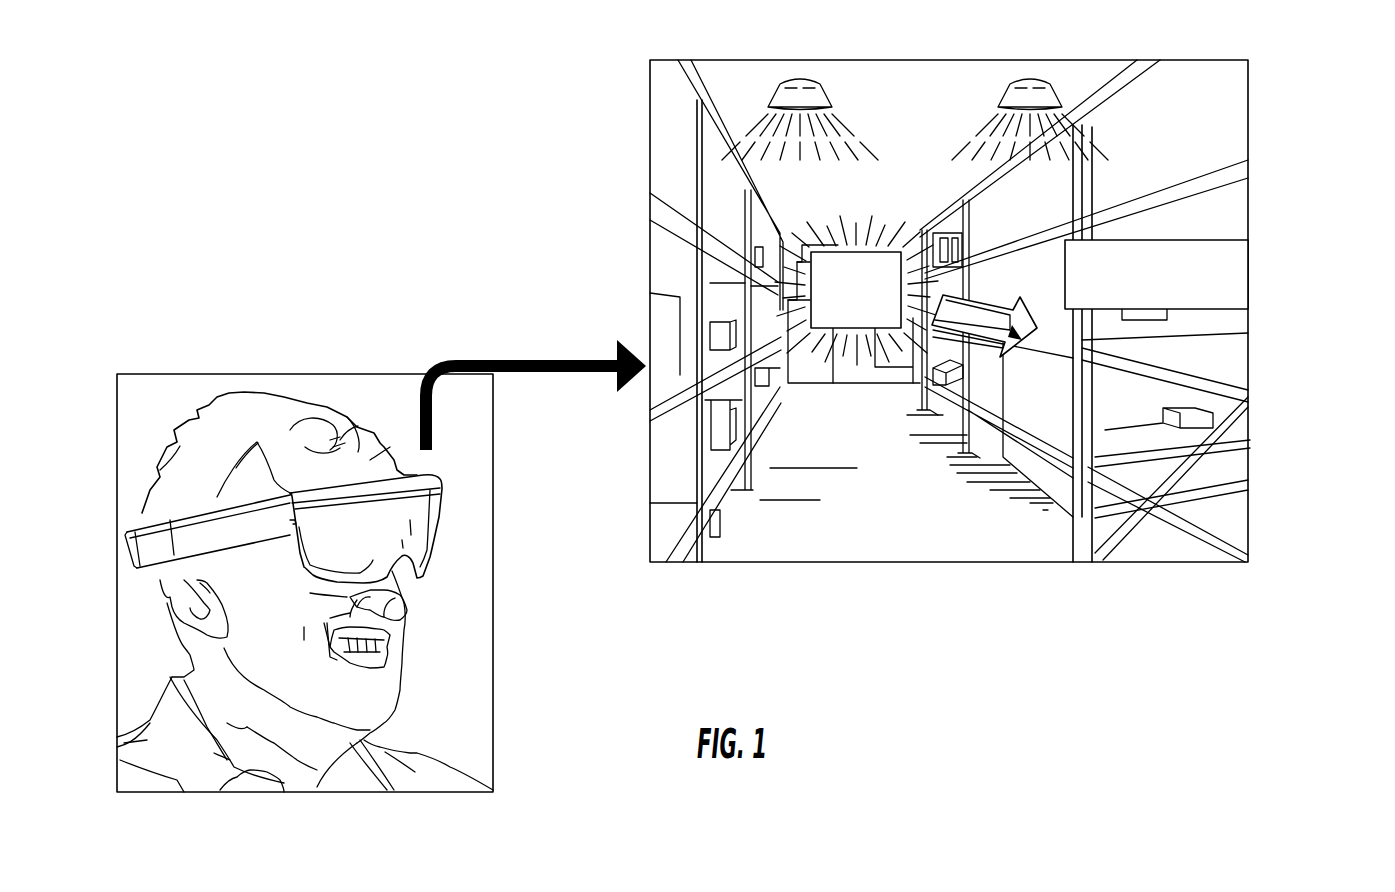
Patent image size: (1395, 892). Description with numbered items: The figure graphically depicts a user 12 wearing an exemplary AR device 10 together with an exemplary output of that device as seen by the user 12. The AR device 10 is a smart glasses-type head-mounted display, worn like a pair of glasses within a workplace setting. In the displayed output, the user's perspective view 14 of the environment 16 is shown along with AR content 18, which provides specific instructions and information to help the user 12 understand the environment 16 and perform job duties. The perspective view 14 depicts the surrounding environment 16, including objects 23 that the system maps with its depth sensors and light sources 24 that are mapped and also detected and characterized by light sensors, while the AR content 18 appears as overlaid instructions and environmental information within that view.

The AR device 10 is at (458, 528).
The user 12 is at (277, 384).
The perspective view 14 is at (636, 275).
The environment 16 is at (843, 516).
The AR content 18 is at (856, 250).
The objects 23 is at (728, 335).
The light sources 24 is at (826, 91).